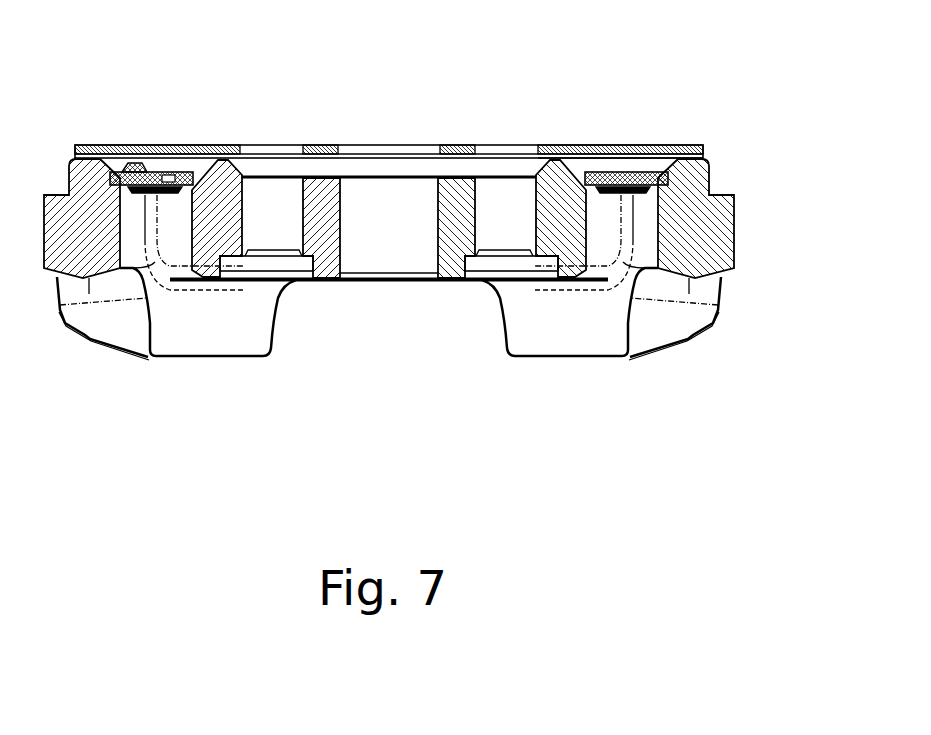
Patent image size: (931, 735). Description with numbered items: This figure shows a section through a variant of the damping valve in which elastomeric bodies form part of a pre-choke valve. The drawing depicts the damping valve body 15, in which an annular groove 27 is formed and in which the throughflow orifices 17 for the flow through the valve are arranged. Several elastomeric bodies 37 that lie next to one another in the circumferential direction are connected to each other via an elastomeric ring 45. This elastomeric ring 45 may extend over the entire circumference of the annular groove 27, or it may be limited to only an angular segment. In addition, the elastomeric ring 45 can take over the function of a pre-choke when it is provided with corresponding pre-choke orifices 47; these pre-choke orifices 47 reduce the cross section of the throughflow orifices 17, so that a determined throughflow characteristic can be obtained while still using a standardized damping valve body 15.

The damping valve body 15 is at (710, 243).
The throughflow orifice 17 is at (138, 230).
The annular groove 27 is at (627, 163).
The elastomeric body 37 is at (130, 147).
The elastomeric ring 45 is at (643, 173).
The pre-choke orifice 47 is at (170, 177).